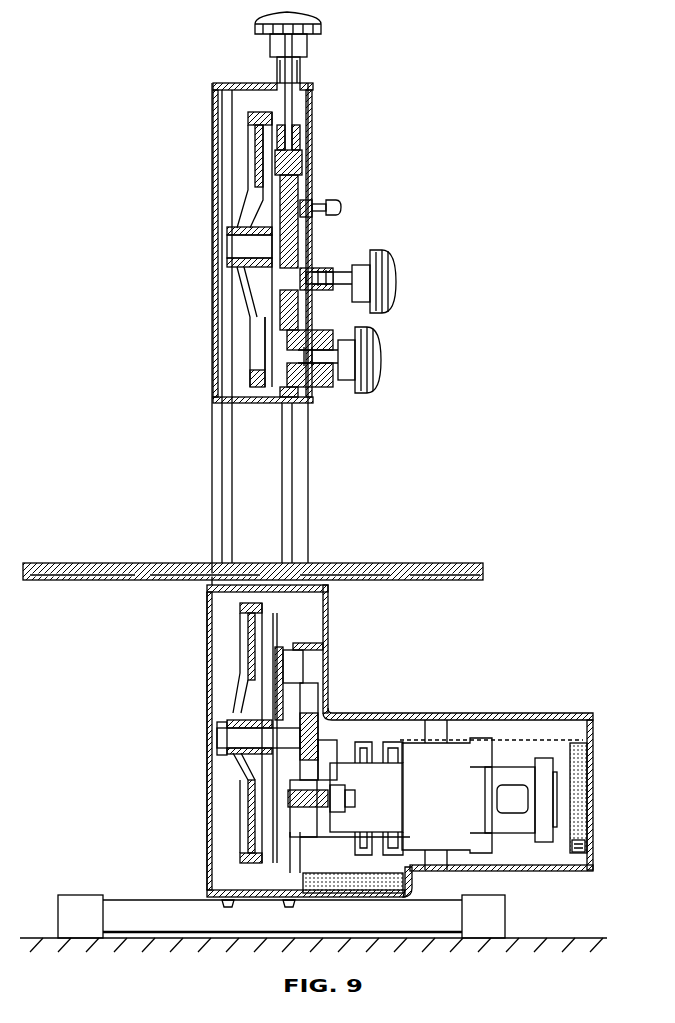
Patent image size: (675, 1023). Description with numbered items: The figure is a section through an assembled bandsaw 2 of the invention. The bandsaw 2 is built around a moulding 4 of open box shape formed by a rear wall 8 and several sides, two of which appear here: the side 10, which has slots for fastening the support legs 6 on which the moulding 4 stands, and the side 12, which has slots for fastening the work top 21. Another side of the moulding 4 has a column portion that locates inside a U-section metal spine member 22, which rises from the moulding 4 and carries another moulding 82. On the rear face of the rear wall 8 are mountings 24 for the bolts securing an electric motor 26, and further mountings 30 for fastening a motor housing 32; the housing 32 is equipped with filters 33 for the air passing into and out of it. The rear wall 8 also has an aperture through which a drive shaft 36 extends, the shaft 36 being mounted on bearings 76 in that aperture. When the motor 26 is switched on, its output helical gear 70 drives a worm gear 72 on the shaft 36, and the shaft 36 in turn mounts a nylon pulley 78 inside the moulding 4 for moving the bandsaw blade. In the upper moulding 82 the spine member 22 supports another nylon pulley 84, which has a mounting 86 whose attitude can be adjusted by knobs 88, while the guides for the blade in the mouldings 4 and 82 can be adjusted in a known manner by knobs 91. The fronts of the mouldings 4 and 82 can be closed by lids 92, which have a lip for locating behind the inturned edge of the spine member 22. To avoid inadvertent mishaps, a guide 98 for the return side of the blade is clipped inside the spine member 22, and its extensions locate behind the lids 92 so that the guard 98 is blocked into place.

The knobs 88 is at (320, 25).
The moulding 82 is at (330, 113).
The mounting 86 is at (297, 175).
The nylon pulley 84 is at (252, 142).
The bandsaw 2 is at (355, 205).
The lids 92 is at (214, 305).
The knobs 91 is at (377, 373).
The guide 98 is at (265, 465).
The spine member 22 is at (300, 510).
The work top 21 is at (480, 567).
The side 12 is at (212, 594).
The nylon pulley 78 is at (245, 640).
The bearings 76 is at (228, 718).
The drive shaft 36 is at (225, 746).
The moulding 4 is at (325, 650).
The mountings 30 is at (300, 663).
The rear wall 8 is at (280, 688).
The worm gear 72 is at (305, 697).
The mountings 24 is at (322, 762).
The motor housing 32 is at (430, 718).
The electric motor 26 is at (440, 740).
The filters 33 is at (570, 798).
The helical gear 70 is at (317, 803).
The support legs 6 is at (127, 912).
The side 10 is at (211, 889).